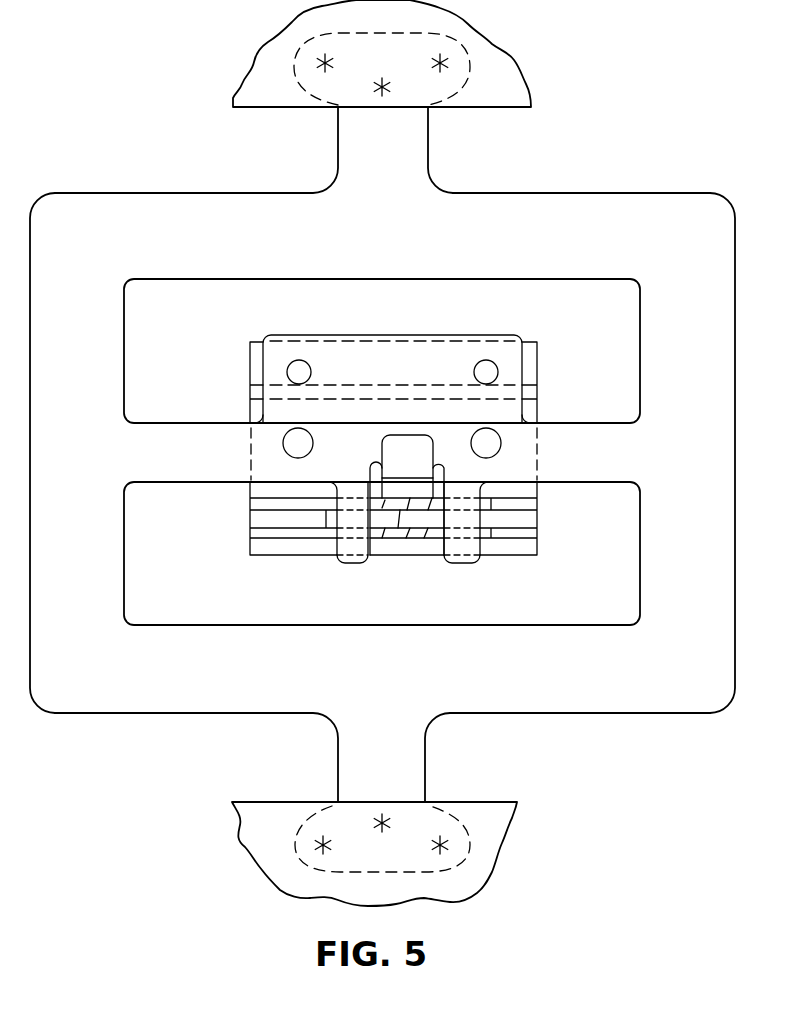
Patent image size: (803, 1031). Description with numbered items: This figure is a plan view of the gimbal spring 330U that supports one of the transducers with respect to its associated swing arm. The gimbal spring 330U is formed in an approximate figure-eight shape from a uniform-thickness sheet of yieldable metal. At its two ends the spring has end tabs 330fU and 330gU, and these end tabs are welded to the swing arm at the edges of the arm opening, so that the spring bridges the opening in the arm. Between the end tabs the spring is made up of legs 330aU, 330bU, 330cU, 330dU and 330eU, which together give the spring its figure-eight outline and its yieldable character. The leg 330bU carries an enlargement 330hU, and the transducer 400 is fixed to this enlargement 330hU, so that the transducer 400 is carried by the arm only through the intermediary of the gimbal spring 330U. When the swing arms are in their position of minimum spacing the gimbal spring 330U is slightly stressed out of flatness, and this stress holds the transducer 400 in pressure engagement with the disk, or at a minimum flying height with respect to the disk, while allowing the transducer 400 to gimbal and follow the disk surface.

The gimbal spring 330U is at (382, 454).
The leg 330aU is at (174, 706).
The leg 330bU is at (183, 432).
The leg 330cU is at (194, 203).
The leg 330dU is at (650, 558).
The leg 330eU is at (115, 551).
The end tab 330fU is at (428, 143).
The end tab 330gU is at (418, 758).
The enlargement 330hU is at (375, 335).
The transducer 400 is at (427, 426).